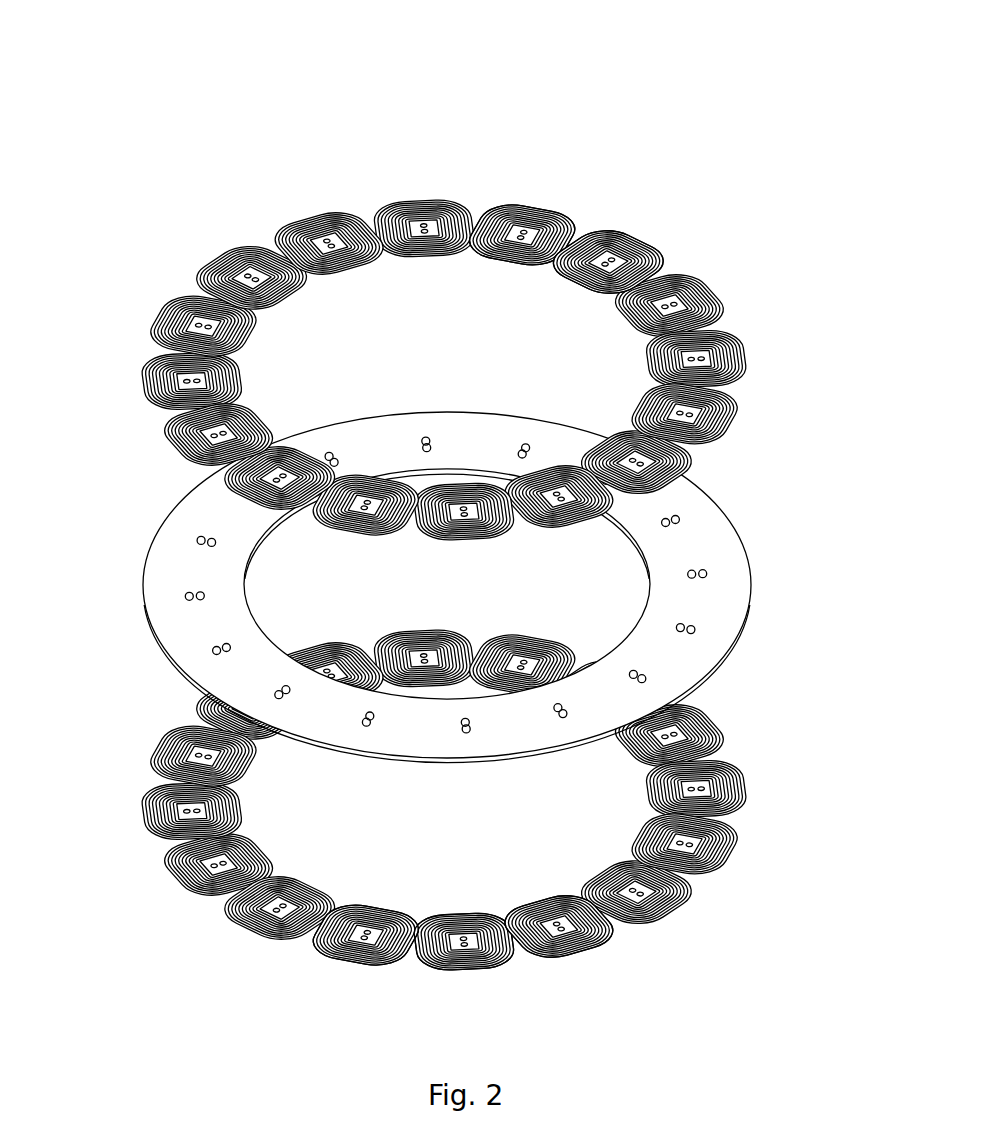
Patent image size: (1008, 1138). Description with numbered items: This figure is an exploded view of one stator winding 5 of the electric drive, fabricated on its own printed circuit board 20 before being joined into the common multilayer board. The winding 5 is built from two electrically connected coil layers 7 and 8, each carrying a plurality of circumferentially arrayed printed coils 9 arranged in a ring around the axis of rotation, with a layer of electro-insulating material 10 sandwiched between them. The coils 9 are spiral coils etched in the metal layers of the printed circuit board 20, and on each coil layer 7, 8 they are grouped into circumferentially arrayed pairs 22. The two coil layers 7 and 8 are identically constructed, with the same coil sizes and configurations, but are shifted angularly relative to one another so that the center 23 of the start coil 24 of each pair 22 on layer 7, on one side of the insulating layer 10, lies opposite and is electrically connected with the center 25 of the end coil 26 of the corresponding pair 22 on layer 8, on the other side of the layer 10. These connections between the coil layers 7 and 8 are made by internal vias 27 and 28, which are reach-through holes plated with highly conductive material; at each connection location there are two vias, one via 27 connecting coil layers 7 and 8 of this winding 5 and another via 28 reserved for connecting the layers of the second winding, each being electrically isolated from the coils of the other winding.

The ring-shaped winding 5 is at (454, 535).
The printed circuit board 20 is at (454, 535).
The coil layer 7 is at (725, 285).
The coil layer 8 is at (715, 713).
The printed coil 9 is at (213, 262).
The layer of electro-insulating material 10 is at (711, 608).
The pair of spiral coils 22 is at (392, 212).
The center of the start coil 23 is at (513, 226).
The start coil 24 is at (542, 224).
The center of the end coil 25 is at (603, 262).
The end coil 26 is at (632, 243).
The internal via 27 is at (605, 945).
The internal via 28 is at (563, 933).